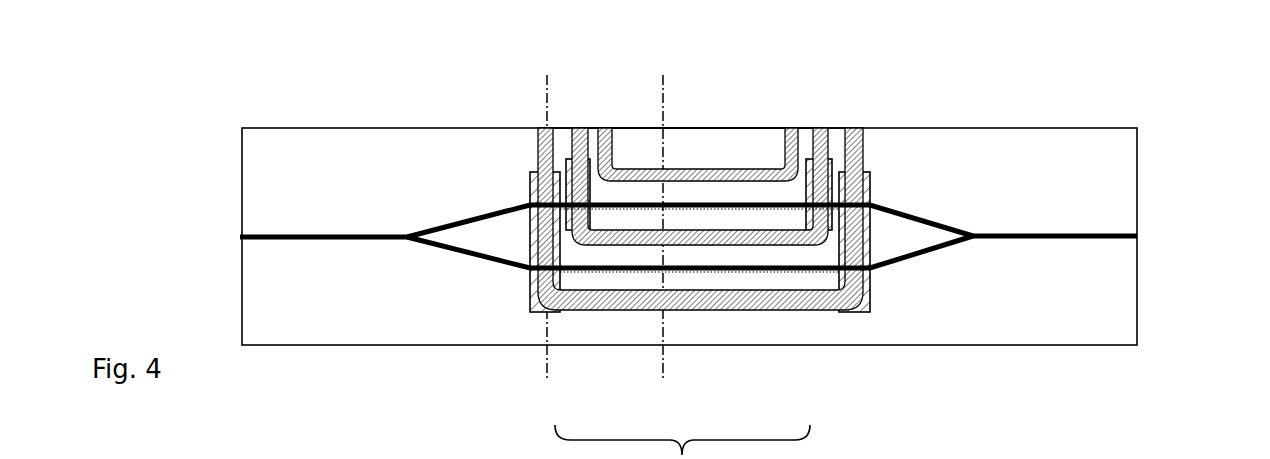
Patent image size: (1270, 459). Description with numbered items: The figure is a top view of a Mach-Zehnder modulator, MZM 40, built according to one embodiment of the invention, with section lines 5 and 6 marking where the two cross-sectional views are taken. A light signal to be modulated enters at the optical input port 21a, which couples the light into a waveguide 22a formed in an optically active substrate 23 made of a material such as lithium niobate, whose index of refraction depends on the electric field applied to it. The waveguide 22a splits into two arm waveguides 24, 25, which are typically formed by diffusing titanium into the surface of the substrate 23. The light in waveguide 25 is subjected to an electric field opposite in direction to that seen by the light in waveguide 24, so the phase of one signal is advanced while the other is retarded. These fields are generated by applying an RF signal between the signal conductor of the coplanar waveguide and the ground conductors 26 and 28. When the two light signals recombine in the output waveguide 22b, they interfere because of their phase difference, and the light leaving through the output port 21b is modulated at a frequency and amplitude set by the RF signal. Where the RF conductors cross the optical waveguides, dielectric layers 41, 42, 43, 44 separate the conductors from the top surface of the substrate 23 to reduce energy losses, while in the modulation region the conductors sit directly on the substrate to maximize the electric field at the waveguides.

The MZM 40 is at (176, 89).
The line 5- 5 is at (538, 89).
The line 6- 6 is at (653, 96).
The optical input port 21a is at (206, 236).
The output port 21b is at (1157, 236).
The waveguide 22a is at (337, 240).
The waveguide 22b is at (1025, 240).
The substrate 23 is at (338, 192).
The waveguide 24 is at (440, 250).
The waveguide 25 is at (472, 218).
The ground conductor 26 is at (686, 170).
The ground conductor 28 is at (793, 312).
The dielectric layer 41 is at (530, 300).
The dielectric layer 42 is at (870, 195).
The dielectric layer 43 is at (805, 187).
The dielectric layer 44 is at (598, 185).